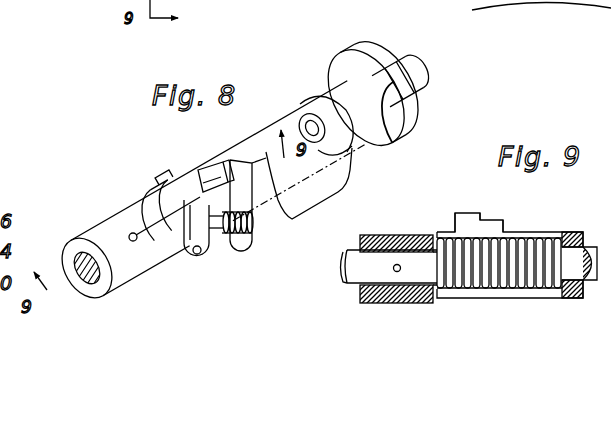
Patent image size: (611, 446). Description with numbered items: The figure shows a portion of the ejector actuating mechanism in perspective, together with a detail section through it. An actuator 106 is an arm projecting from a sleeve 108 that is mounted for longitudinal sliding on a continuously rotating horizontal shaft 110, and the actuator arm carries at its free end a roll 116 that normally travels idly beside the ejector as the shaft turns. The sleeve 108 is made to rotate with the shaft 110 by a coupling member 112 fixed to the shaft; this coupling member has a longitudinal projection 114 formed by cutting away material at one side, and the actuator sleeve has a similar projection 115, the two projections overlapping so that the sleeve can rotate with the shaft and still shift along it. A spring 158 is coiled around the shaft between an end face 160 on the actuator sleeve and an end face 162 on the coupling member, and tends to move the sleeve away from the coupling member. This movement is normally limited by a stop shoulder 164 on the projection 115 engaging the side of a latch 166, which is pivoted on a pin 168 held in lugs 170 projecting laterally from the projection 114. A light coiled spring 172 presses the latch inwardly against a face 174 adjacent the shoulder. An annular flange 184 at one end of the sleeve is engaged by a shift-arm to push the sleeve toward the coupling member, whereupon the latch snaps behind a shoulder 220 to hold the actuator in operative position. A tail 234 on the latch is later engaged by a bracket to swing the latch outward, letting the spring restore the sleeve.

In FIG. 8, the actuator 106 is at (250, 142).
In FIG. 8, the actuator sleeve 108 is at (352, 90).
In FIG. 9, the actuator sleeve 108 is at (464, 291).
In FIG. 8, the shaft 110 is at (410, 68).
In FIG. 9, the shaft 110 is at (352, 270).
In FIG. 8, the coupling member 112 is at (150, 280).
In FIG. 9, the coupling member 112 is at (398, 244).
In FIG. 8, the longitudinal projection 114 is at (164, 223).
In FIG. 8, the projection 115 is at (170, 178).
In FIG. 8, the roll 116 is at (316, 114).
In FIG. 9, the spring 158 is at (531, 288).
In FIG. 8, the end face 160 is at (290, 175).
In FIG. 9, the end face 160 is at (556, 292).
In FIG. 8, the end face 162 is at (147, 205).
In FIG. 9, the end face 162 is at (438, 300).
In FIG. 8, the stop shoulder 164 is at (174, 183).
In FIG. 9, the stop shoulder 164 is at (458, 214).
In FIG. 8, the latch 166 is at (257, 228).
In FIG. 8, the pin 168 is at (194, 254).
In FIG. 8, the lugs 170 is at (196, 258).
In FIG. 8, the light coiled spring 172 is at (243, 250).
In FIG. 8, the face 174 is at (213, 173).
In FIG. 9, the face 174 is at (487, 222).
In FIG. 8, the annular flange 184 is at (418, 119).
In FIG. 8, the shoulder 220 is at (218, 178).
In FIG. 9, the shoulder 220 is at (507, 228).
In FIG. 8, the tail 234 is at (255, 248).